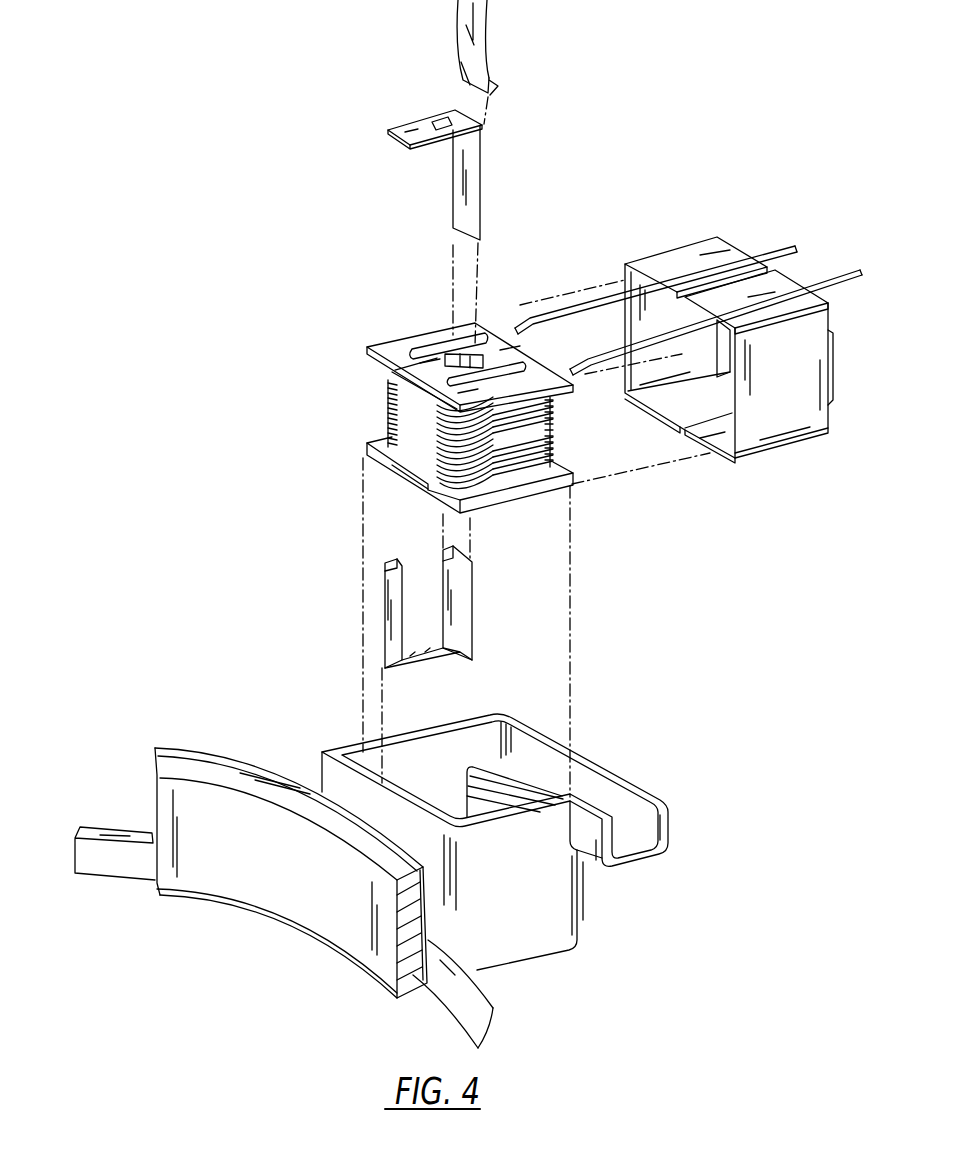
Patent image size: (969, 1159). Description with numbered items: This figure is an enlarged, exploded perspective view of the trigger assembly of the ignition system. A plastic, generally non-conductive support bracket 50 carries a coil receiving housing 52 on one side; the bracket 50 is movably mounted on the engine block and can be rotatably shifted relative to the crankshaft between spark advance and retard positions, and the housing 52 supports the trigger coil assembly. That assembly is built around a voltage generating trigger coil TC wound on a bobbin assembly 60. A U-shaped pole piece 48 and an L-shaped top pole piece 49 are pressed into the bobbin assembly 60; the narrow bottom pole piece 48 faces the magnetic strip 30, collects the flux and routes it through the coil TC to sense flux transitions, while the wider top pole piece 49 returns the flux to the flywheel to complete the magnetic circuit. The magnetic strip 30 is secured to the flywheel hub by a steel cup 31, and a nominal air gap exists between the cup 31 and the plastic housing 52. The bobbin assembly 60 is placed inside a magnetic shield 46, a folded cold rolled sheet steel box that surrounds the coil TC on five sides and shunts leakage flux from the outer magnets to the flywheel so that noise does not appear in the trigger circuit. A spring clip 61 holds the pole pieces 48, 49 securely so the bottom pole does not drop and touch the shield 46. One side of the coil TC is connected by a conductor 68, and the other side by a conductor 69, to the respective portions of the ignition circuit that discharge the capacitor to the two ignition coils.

The spring clip 61 is at (470, 28).
The L-shaped top pole piece 49 is at (486, 183).
The bobbin assembly 60 is at (410, 342).
The trigger coil TC is at (388, 405).
The conductor 68 is at (772, 250).
The conductor 69 is at (838, 272).
The magnetic shield 46 is at (770, 452).
The U-shaped pole piece 48 is at (421, 668).
The coil receiving housing 52 is at (555, 957).
The magnetic strip 30 is at (305, 917).
The steel cup 31 is at (368, 973).
The support bracket 50 is at (497, 1000).